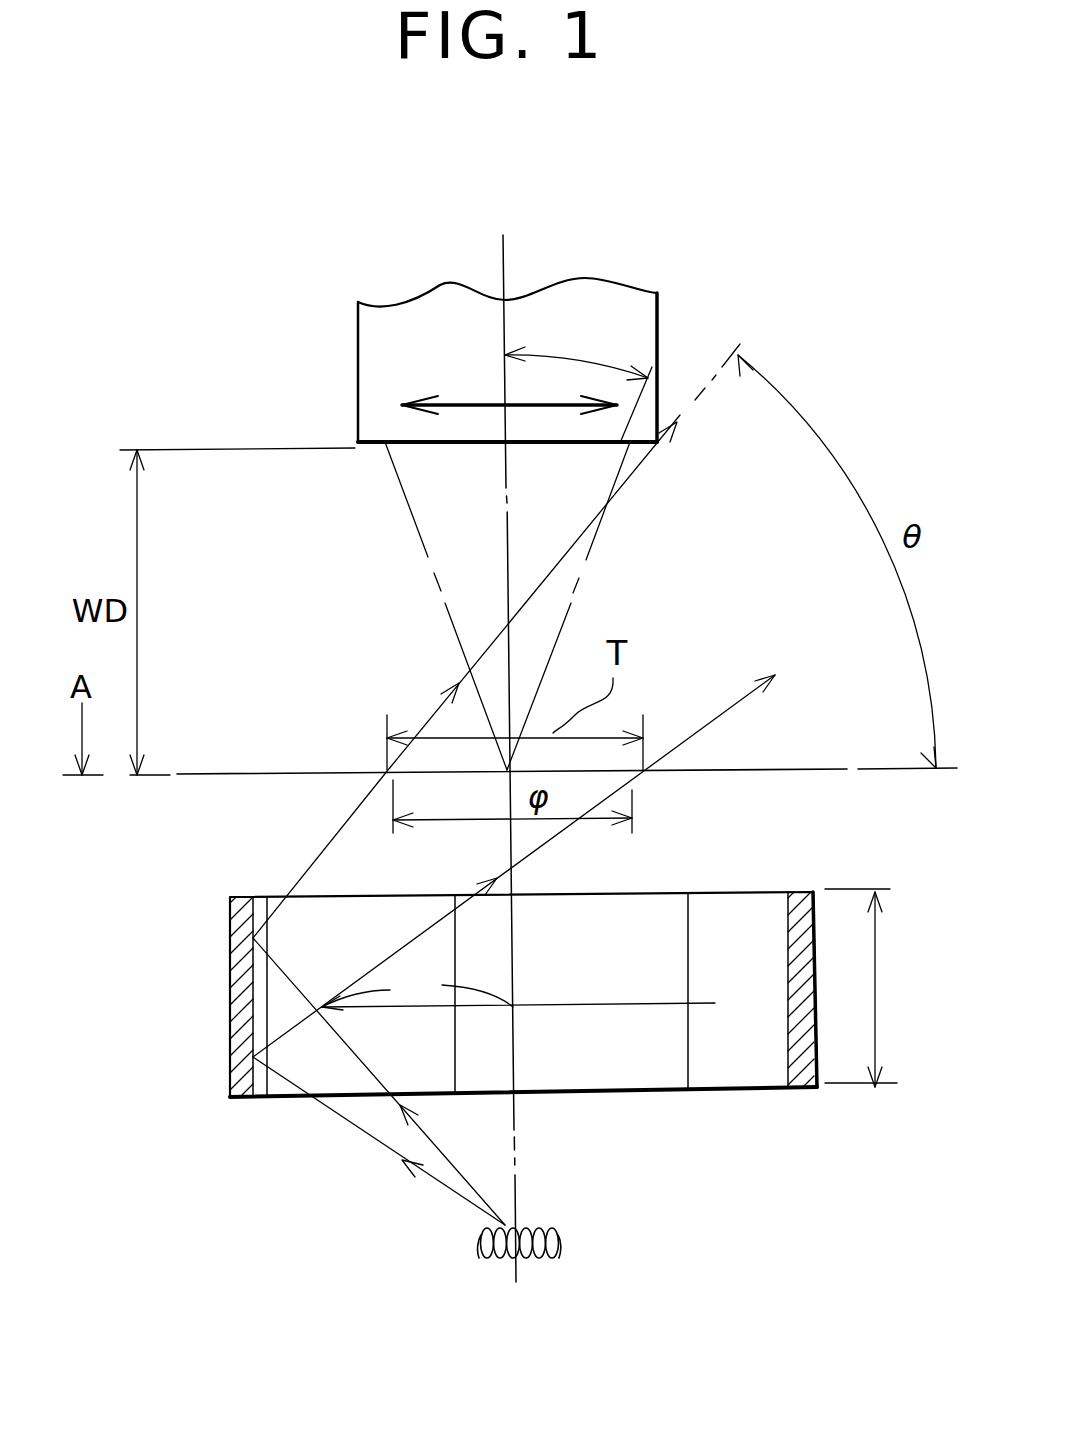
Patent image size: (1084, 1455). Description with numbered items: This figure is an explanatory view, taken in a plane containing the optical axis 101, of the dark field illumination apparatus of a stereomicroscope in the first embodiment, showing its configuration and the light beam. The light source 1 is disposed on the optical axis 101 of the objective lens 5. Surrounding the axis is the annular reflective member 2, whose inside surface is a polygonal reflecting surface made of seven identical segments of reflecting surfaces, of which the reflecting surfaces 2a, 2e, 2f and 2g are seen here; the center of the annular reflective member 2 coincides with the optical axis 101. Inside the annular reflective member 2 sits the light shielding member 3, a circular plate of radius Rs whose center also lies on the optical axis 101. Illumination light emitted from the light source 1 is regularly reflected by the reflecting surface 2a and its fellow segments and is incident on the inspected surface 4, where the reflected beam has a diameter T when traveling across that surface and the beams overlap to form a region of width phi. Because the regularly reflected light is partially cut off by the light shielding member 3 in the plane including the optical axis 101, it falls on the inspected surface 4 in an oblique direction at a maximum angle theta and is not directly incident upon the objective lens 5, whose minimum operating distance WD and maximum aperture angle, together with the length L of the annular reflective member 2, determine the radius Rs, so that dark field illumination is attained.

The light source 1 is at (560, 1240).
The annular reflective member 2 is at (525, 998).
The reflecting surface 2a is at (263, 1085).
The reflecting surface 2e is at (723, 900).
The reflecting surface 2f is at (613, 907).
The reflecting surface 2g is at (320, 925).
The light shielding member 3 is at (700, 1003).
The inspected surface 4 is at (770, 772).
The objective lens 5 is at (458, 402).
The optical axis 101 is at (505, 265).